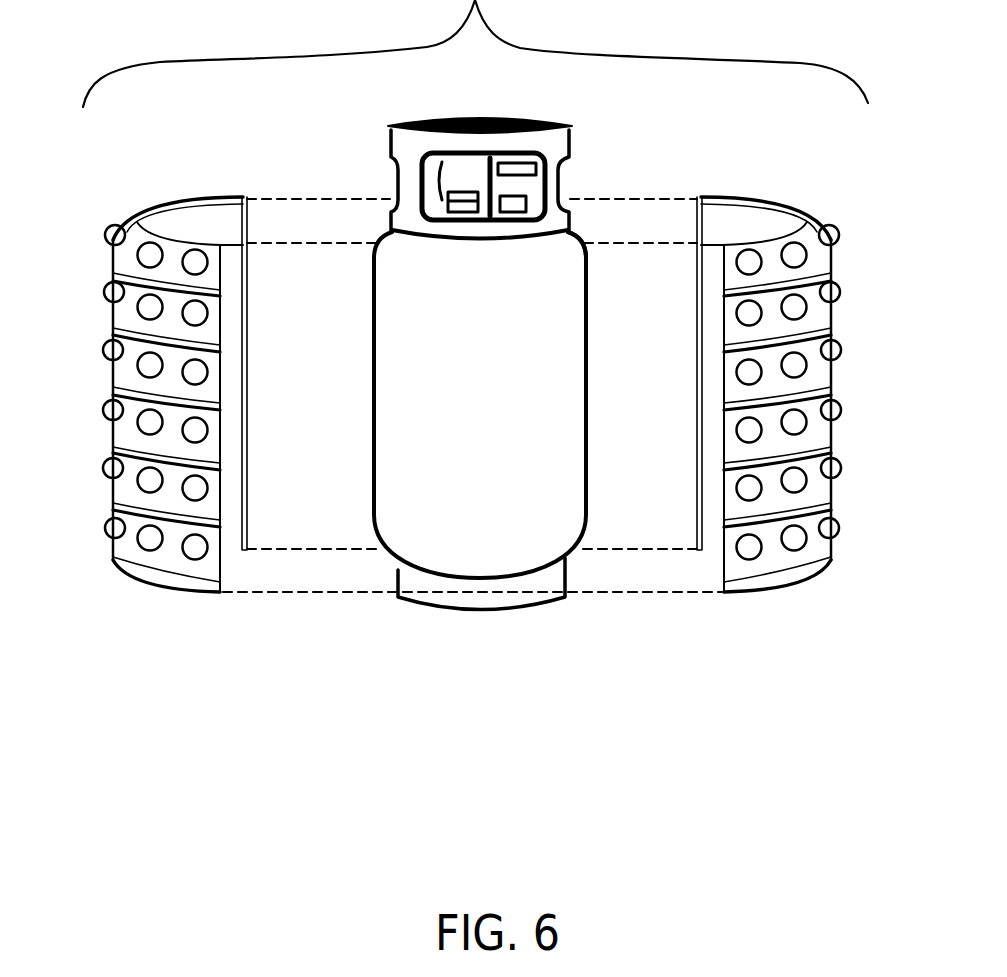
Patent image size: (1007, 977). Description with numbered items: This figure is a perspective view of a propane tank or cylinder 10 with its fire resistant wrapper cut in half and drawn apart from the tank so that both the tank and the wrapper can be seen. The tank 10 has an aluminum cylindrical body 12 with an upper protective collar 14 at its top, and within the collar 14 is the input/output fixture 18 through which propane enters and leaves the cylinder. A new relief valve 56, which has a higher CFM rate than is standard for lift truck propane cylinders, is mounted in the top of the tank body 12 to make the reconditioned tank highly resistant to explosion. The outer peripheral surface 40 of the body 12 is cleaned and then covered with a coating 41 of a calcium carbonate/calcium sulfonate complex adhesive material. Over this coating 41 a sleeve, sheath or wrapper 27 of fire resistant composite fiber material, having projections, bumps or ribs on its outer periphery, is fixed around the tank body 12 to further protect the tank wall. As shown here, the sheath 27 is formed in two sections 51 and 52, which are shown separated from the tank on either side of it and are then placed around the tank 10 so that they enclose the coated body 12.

The propane tank or cylinder 10 is at (630, 616).
The cylindrical body 12 is at (543, 363).
The upper protective collar 14 is at (405, 165).
The input/output fixture 18 is at (573, 178).
The sleeve, sheath or wrapper 27 is at (117, 490).
The outer peripheral surface 40 is at (506, 405).
The coating 41 is at (587, 288).
The sheath section 51 is at (195, 590).
The sheath section 52 is at (805, 577).
The relief valve 56 is at (462, 190).